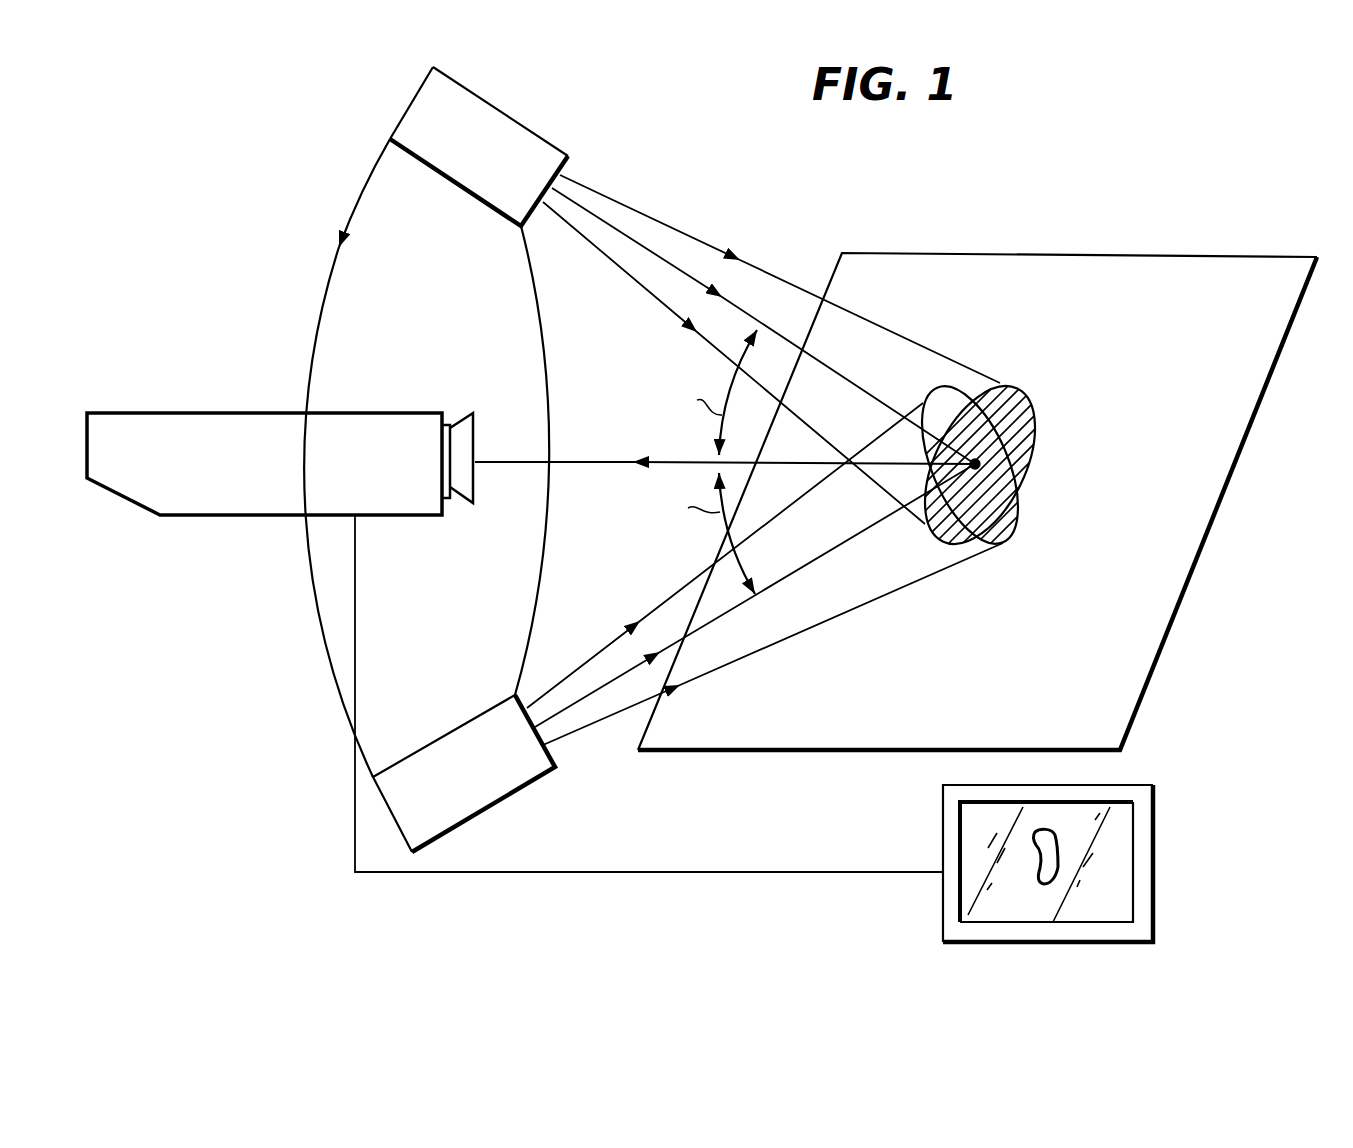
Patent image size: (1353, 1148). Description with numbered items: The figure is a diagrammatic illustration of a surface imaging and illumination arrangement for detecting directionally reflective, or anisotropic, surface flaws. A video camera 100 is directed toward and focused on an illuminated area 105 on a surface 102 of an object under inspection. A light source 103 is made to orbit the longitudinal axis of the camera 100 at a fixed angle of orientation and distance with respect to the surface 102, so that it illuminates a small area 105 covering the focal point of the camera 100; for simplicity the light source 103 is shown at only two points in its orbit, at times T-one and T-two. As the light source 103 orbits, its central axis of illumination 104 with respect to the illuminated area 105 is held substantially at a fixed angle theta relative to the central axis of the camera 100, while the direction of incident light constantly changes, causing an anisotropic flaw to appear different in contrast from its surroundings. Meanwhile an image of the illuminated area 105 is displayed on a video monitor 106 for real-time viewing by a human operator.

The video camera 100 is at (378, 413).
The surface 102 is at (1085, 253).
The light source 103 is at (569, 157).
The central axis of illumination 104 is at (742, 310).
The illuminated area 105 is at (1028, 488).
The video monitor 106 is at (1147, 783).